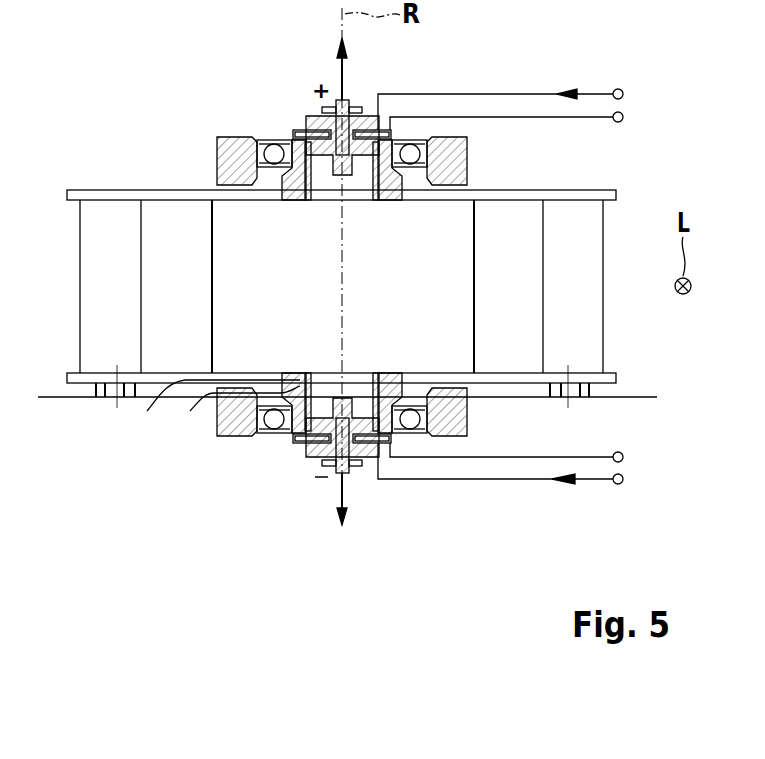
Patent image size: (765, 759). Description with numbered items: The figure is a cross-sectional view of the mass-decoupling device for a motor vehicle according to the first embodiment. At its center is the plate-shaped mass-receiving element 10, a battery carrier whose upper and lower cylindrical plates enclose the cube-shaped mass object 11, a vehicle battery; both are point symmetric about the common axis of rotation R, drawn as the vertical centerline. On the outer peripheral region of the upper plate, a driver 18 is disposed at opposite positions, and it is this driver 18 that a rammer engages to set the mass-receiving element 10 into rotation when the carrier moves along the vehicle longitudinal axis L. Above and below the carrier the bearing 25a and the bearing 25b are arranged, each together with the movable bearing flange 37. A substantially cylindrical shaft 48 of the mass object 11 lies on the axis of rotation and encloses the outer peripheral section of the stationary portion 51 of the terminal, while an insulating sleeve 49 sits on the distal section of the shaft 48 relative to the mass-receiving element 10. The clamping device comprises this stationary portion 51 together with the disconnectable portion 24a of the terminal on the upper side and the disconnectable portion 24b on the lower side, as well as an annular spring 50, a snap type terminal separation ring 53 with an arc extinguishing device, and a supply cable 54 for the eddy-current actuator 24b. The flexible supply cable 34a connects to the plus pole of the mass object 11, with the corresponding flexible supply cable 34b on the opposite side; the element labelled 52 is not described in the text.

The mass-receiving element 10 is at (589, 190).
The mass object 11 is at (605, 330).
The driver 18 is at (569, 397).
The disconnectable portion of the terminal 24a is at (352, 128).
The disconnectable portion of the terminal 24b is at (350, 442).
The bearing 25a is at (277, 147).
The bearing 25b is at (277, 437).
The flexible supply cable 34a is at (337, 100).
The flexible supply cable 34b is at (339, 471).
The movable bearing flange 37 is at (217, 165).
The shaft 48 is at (298, 130).
The insulating sleeve 49 is at (300, 407).
The annular spring 50 is at (310, 460).
The stationary portion of the terminal 51 is at (215, 410).
The terminal cap 52 is at (346, 470).
The snap type terminal separation ring 53 is at (393, 441).
The supply cable 54 is at (523, 481).